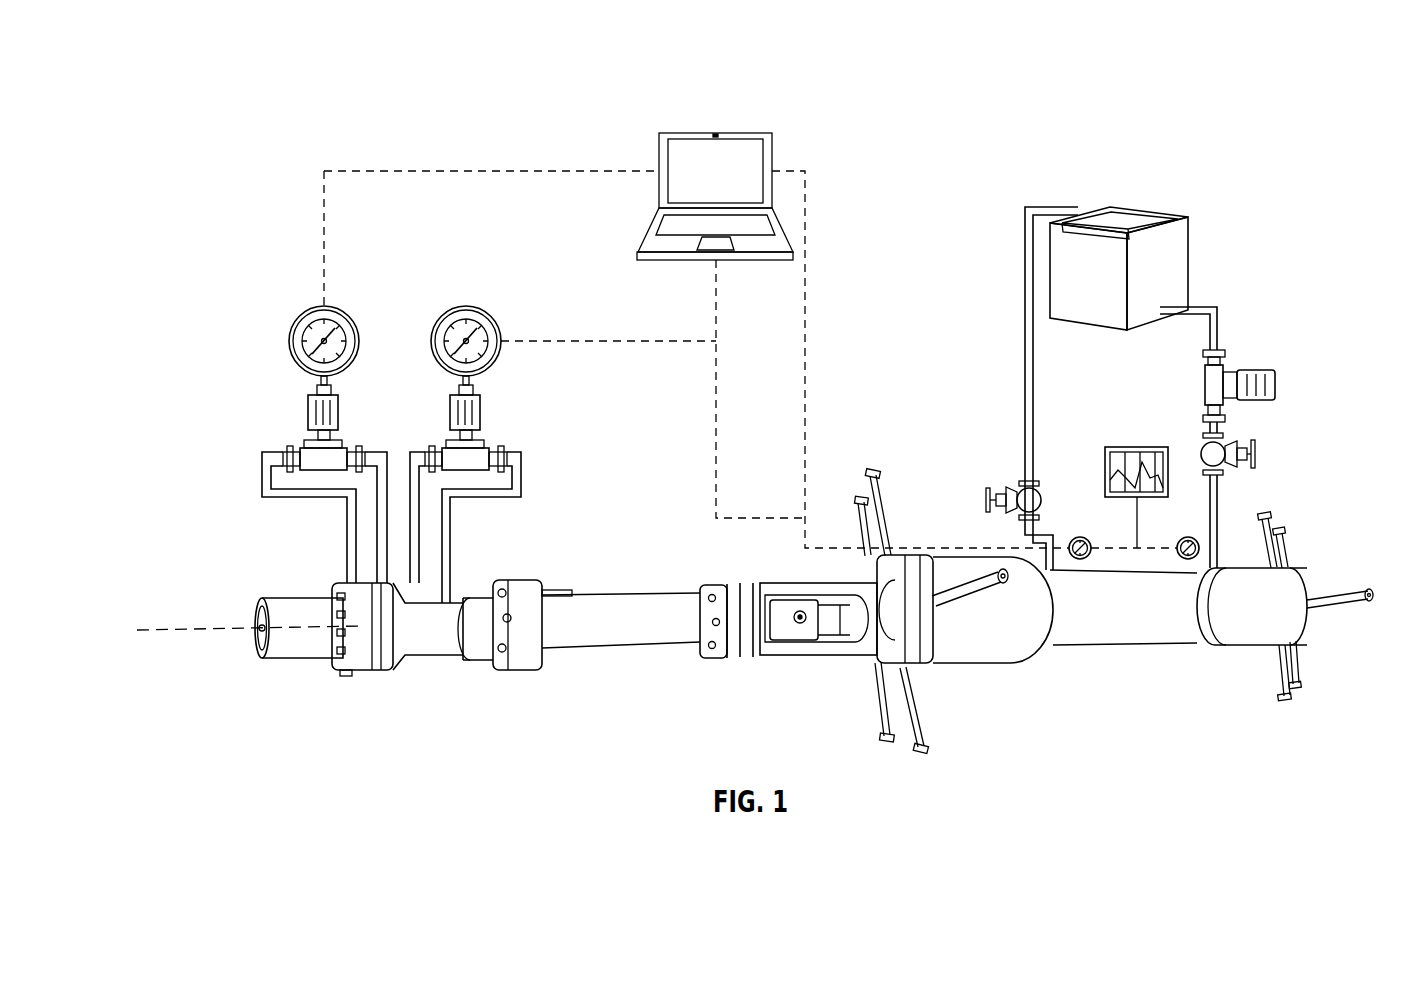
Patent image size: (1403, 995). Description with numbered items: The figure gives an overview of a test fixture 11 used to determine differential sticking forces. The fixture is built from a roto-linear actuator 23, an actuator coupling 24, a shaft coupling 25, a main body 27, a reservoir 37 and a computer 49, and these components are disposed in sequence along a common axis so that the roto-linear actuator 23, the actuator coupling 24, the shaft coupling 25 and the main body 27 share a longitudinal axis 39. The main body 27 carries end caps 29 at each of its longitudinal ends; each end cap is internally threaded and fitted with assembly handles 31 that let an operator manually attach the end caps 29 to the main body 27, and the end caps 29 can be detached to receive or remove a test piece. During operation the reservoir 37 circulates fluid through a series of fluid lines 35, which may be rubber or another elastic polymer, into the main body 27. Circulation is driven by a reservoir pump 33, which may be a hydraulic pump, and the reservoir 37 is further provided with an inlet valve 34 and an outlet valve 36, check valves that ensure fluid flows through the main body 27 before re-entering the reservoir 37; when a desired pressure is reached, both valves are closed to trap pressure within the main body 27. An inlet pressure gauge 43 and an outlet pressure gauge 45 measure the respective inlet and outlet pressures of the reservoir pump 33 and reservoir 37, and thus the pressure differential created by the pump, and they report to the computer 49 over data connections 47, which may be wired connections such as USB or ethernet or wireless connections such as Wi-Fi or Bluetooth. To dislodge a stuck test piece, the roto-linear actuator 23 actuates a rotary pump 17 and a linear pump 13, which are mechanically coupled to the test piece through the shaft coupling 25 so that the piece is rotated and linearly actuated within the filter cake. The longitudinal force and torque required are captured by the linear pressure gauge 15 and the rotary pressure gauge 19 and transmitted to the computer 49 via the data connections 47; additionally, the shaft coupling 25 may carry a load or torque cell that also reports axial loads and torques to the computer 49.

The test fixture 11 is at (230, 116).
The linear pump 13 is at (482, 414).
The linear pressure gauge 15 is at (474, 307).
The rotary pump 17 is at (308, 425).
The rotary pressure gauge 19 is at (292, 335).
The roto-linear actuator 23 is at (424, 684).
The actuator coupling 24 is at (856, 655).
The shaft coupling 25 is at (796, 641).
The main body 27 is at (1121, 646).
The end caps 29 is at (976, 664).
The assembly handles 31 is at (1284, 702).
The reservoir pump 33 is at (1276, 396).
The inlet valve 34 is at (1258, 455).
The fluid lines 35 is at (1025, 371).
The outlet valve 36 is at (986, 500).
The reservoir 37 is at (1190, 245).
The longitudinal axis 39 is at (180, 628).
The inlet pressure gauge 43 is at (1190, 538).
The outlet pressure gauge 45 is at (1075, 538).
The data connections 47 is at (452, 170).
The computer 49 is at (762, 153).